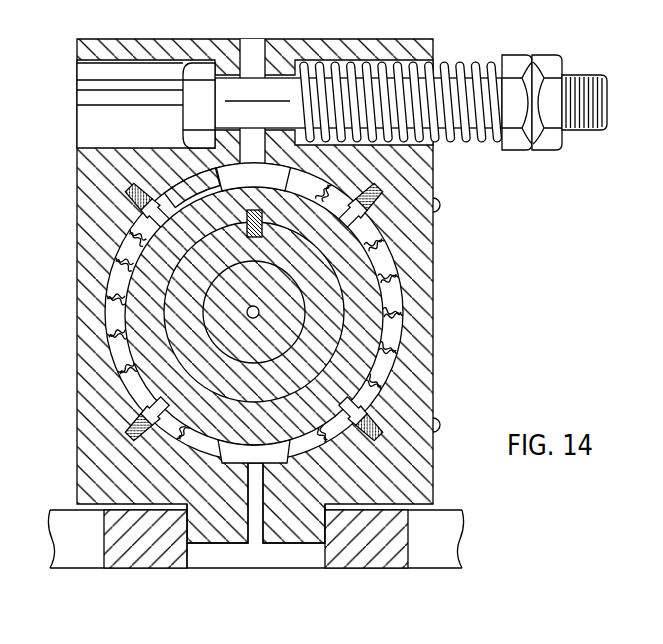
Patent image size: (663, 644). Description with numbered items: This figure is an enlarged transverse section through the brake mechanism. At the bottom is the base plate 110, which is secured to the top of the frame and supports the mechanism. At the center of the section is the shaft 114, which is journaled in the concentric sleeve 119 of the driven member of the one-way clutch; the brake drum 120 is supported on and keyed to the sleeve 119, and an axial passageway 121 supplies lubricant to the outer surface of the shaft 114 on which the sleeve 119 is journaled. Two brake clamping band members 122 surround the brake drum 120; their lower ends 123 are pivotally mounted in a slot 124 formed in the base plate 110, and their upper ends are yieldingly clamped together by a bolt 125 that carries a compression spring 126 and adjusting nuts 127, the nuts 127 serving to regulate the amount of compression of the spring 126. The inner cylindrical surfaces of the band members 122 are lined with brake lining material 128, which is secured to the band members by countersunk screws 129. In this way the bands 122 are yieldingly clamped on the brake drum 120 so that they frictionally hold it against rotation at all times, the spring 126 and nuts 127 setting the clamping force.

The base plate 110 is at (366, 560).
The shaft 114 is at (215, 317).
The sleeve 119 is at (330, 318).
The brake drum 120 is at (365, 290).
The axial passageway 121 is at (267, 176).
The brake clamping band members 122 is at (95, 367).
The lower ends 123 is at (284, 545).
The slot 124 is at (189, 558).
The bolt 125 is at (250, 88).
The compression spring 126 is at (453, 70).
The adjusting nuts 127 is at (517, 64).
The brake lining material 128 is at (127, 248).
The countersunk screws 129 is at (132, 196).